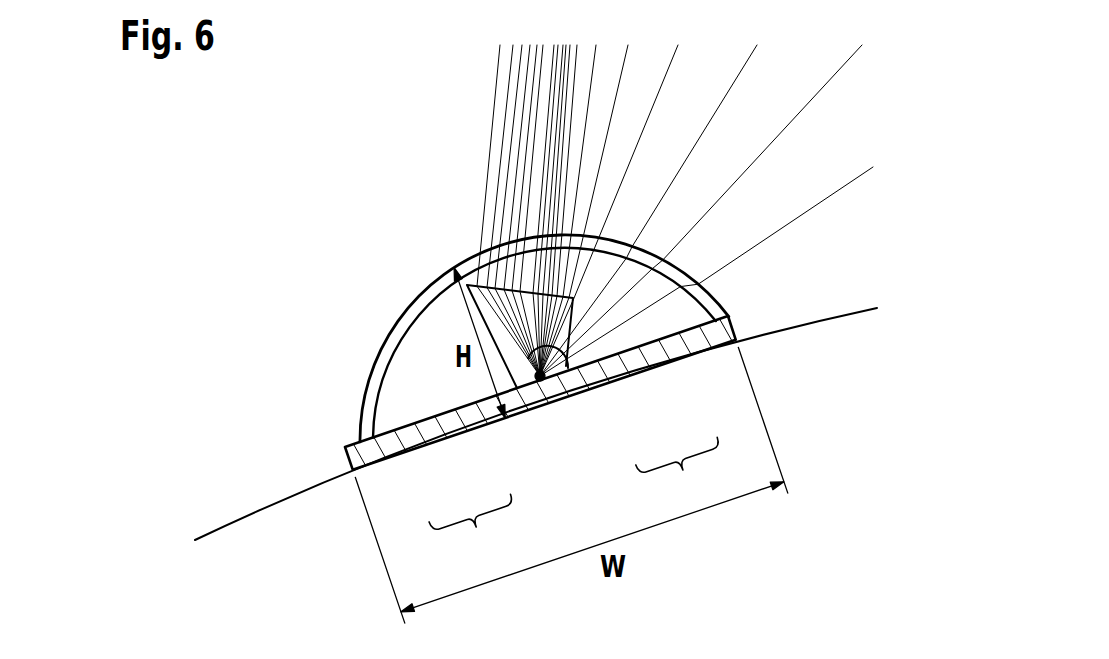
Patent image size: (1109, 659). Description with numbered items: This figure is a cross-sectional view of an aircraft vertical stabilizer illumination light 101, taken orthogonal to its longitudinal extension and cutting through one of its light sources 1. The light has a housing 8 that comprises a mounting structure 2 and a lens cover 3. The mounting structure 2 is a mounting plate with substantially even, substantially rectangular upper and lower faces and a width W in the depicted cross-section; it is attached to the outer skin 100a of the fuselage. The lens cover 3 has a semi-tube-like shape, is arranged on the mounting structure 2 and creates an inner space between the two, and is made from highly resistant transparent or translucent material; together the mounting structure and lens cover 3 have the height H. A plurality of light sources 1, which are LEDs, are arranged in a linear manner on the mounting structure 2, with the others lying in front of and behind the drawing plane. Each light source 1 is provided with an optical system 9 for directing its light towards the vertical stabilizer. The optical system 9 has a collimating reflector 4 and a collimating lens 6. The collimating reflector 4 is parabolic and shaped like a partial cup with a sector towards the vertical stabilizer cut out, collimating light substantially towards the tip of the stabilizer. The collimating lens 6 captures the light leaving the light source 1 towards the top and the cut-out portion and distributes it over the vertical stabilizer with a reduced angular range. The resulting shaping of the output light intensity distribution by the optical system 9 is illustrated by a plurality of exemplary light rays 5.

The light source 1 is at (557, 374).
The mounting structure 2 is at (470, 423).
The lens cover 3 is at (373, 391).
The collimating reflector 4 is at (573, 302).
The light rays 5 is at (727, 190).
The collimating lens 6 is at (577, 368).
The housing 8 is at (470, 529).
The optical system 9 is at (677, 470).
The outer skin 100a is at (262, 509).
The aircraft vertical stabilizer illumination light 101 is at (318, 261).